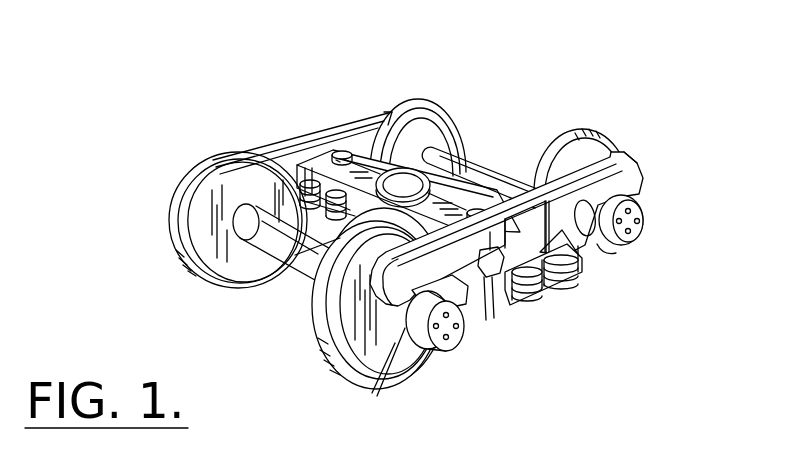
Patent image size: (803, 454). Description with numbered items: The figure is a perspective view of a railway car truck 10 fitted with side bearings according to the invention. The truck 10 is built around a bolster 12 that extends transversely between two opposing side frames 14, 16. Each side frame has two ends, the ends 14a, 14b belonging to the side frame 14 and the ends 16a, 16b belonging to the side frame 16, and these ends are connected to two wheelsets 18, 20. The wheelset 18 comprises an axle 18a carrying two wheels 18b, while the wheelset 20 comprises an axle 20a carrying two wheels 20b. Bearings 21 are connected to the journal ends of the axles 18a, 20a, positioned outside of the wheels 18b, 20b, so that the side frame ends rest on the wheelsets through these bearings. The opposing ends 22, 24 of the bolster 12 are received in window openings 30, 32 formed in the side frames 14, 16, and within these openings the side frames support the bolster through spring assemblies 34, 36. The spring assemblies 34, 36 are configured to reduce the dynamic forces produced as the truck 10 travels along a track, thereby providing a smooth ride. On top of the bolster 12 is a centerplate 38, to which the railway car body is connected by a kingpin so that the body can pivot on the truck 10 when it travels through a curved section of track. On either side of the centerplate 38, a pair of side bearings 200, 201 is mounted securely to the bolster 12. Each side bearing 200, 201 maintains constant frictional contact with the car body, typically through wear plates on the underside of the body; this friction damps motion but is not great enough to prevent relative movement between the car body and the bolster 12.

The railway car truck 10 is at (743, 53).
The bolster 12 is at (415, 137).
The side frame 14 is at (534, 268).
The end of side frame 14a is at (669, 185).
The end of side frame 14b is at (354, 392).
The side frame 16 is at (302, 148).
The end of side frame 16a is at (352, 70).
The end of side frame 16b is at (213, 216).
The wheelset 18 is at (641, 82).
The axle 18a is at (498, 137).
The wheels 18b is at (523, 143).
The wheelset 20 is at (245, 317).
The axle 20a is at (249, 264).
The wheels 20b is at (276, 311).
The bearings 21 is at (550, 291).
The end of bolster 22 is at (571, 282).
The end of bolster 24 is at (307, 130).
The window opening 30 is at (596, 261).
The window opening 32 is at (273, 156).
The spring assembly 34 is at (561, 294).
The spring assembly 36 is at (256, 164).
The centerplate 38 is at (428, 131).
The side bearing 200 is at (533, 156).
The side bearing 201 is at (300, 117).